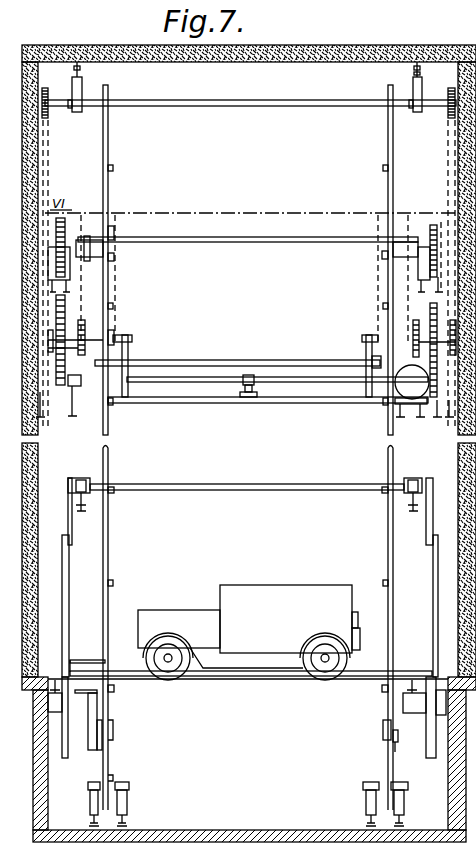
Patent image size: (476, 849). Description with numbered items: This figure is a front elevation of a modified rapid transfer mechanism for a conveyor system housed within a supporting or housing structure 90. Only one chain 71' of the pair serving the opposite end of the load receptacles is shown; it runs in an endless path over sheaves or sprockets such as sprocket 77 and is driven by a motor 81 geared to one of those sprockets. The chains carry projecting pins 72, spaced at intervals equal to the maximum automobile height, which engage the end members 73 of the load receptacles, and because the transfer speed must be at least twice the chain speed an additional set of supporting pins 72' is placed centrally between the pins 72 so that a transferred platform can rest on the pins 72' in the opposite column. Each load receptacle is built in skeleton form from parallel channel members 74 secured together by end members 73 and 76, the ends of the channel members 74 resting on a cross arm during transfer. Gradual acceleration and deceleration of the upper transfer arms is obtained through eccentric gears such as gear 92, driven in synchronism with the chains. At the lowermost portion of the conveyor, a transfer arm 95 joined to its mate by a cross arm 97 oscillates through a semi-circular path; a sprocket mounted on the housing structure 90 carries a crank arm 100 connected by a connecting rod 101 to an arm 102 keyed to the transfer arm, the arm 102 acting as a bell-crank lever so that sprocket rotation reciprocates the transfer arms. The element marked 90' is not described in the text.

The chain 71' is at (262, 447).
The projecting pins 72 is at (248, 479).
The supporting pins 72' is at (248, 374).
The end members 73 is at (116, 368).
The channel members 74 is at (248, 243).
The end member 76 is at (114, 233).
The sprocket 77 is at (403, 90).
The motor 81 is at (412, 399).
The supporting or housing structure 90 is at (248, 52).
The hoist rod 90' is at (432, 37).
The eccentric gear 92 is at (441, 222).
The transfer arm 95 is at (384, 723).
The cross arm 97 is at (396, 753).
The crank arm 100 is at (68, 492).
The connecting rod 101 is at (63, 636).
The arm 102 is at (426, 741).